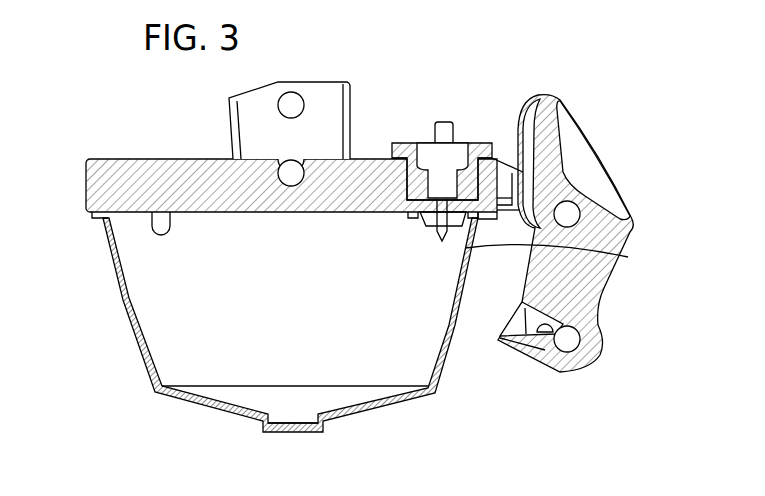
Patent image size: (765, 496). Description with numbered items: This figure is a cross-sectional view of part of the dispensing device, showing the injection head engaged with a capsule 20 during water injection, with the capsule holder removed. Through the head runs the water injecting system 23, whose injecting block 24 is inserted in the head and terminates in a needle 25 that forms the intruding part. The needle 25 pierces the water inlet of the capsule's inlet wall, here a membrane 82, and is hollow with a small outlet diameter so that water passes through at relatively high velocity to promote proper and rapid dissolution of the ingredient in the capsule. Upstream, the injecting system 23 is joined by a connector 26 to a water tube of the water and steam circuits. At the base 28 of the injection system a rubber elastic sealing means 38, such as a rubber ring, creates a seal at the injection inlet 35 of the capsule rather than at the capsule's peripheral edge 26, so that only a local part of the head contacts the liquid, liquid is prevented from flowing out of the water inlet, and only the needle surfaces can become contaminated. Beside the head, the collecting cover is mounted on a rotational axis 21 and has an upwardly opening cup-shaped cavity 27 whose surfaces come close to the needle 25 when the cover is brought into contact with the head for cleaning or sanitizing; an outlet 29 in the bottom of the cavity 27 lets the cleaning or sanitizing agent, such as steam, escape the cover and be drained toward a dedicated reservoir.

The bowl 20 is at (124, 305).
The rotational axis 21 is at (569, 214).
The water injecting system 23 is at (487, 125).
The injecting block 24 is at (405, 143).
The needle 25 is at (450, 229).
The connector 26 is at (443, 121).
The cup-shaped cavity 27 is at (548, 345).
The base of the injection system 28 is at (410, 218).
The outlet 29 is at (570, 340).
The injection inlet 35 is at (561, 216).
The rubber elastic sealing means 38 is at (423, 226).
The membrane 82 is at (155, 212).